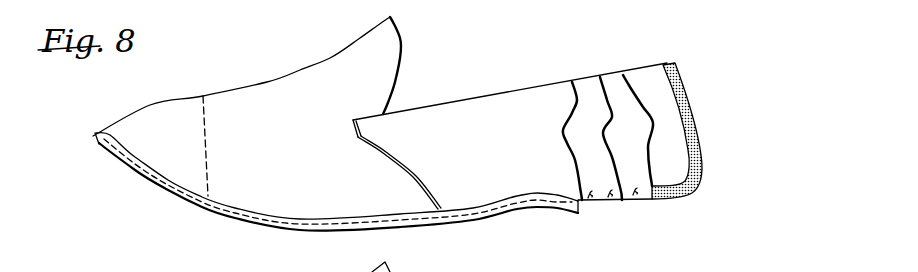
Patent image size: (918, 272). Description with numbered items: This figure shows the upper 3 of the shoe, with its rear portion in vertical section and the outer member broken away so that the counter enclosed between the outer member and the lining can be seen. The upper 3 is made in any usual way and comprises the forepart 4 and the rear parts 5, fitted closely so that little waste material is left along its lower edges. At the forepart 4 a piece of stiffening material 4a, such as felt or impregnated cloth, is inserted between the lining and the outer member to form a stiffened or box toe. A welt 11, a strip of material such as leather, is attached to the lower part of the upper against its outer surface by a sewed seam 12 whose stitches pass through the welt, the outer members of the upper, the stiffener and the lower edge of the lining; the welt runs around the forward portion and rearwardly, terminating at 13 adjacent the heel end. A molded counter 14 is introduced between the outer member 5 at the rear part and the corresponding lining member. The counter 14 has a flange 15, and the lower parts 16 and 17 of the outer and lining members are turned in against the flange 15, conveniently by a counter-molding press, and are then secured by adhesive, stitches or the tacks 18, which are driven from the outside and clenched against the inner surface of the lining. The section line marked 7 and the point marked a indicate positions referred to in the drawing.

The upper 3 is at (443, 72).
The forepart 4 is at (297, 68).
The stiffening material 4a is at (205, 125).
The rear parts 5 is at (572, 115).
The section line 7 is at (303, 10).
The welt 11 is at (160, 178).
The sewed seam 12 is at (112, 149).
The terminating point of welt 13 is at (545, 195).
The molded counter 14 is at (623, 133).
The flange 15 is at (672, 198).
The turned-in part 16 is at (672, 200).
The turned-in part 17 is at (660, 185).
The tacks 18 is at (683, 190).
The seam point a is at (665, 67).